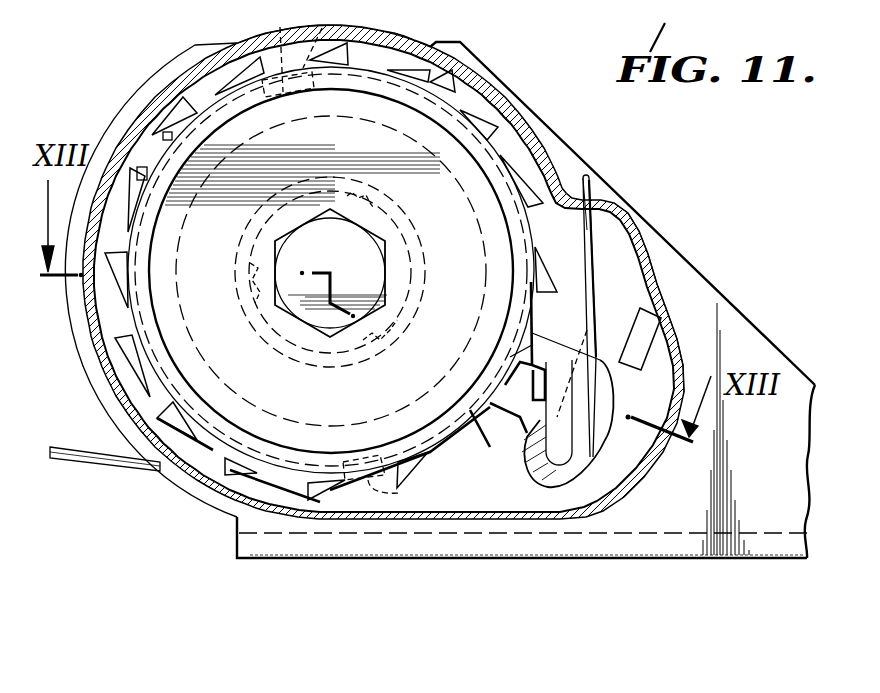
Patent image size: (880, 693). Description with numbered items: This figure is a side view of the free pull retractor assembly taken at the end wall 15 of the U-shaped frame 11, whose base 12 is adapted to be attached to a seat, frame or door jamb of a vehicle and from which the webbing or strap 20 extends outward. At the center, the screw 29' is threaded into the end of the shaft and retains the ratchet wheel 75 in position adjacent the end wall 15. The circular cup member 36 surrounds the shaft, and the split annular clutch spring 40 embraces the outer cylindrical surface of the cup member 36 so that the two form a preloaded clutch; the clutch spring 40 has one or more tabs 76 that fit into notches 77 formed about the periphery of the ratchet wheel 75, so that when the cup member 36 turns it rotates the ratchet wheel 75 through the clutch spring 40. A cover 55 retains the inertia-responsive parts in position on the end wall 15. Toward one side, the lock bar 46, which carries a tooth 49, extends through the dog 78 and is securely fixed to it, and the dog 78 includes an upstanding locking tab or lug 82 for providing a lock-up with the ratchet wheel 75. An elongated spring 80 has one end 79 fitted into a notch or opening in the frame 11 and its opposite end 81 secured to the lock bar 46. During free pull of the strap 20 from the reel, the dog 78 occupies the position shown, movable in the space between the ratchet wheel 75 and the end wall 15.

The frame 11 is at (307, 560).
The base 12 is at (574, 556).
The end wall 15 is at (527, 108).
The webbing or strap 20 is at (80, 459).
The screw 29' is at (344, 272).
The cup member 36 is at (500, 182).
The clutch spring 40 is at (323, 28).
The lock bar 46 is at (577, 435).
The tooth 49 is at (590, 333).
The cover 55 is at (117, 382).
The ratchet wheel 75 is at (432, 80).
The tabs 76 is at (140, 172).
The notches 77 is at (281, 27).
The dog 78 is at (557, 352).
The end of spring 79 is at (590, 188).
The elongated spring 80 is at (600, 290).
The opposite end of spring 81 is at (590, 512).
The locking tab or lug 82 is at (517, 427).